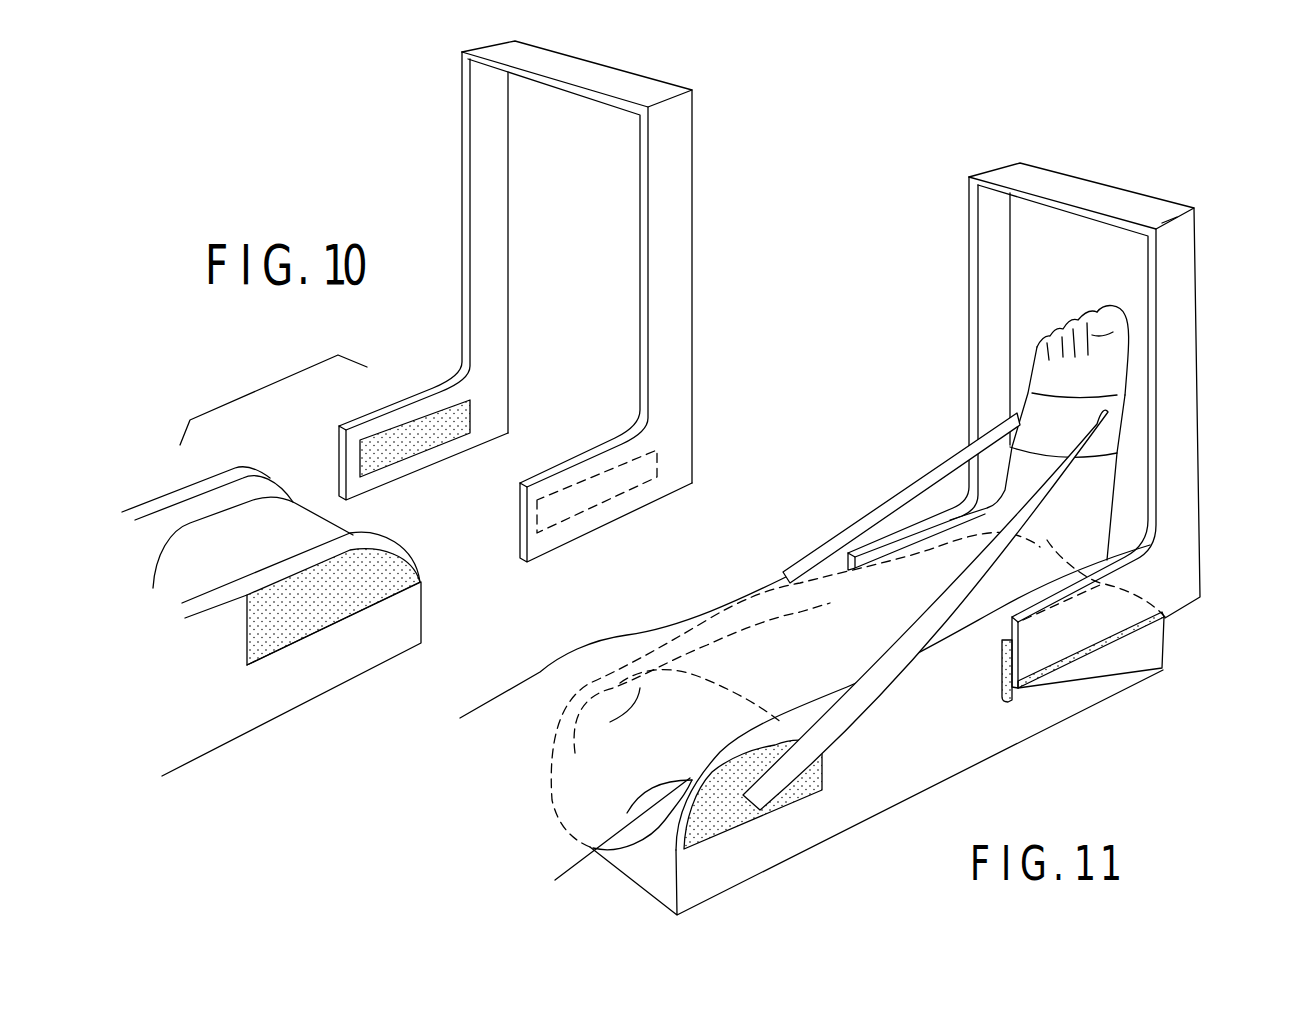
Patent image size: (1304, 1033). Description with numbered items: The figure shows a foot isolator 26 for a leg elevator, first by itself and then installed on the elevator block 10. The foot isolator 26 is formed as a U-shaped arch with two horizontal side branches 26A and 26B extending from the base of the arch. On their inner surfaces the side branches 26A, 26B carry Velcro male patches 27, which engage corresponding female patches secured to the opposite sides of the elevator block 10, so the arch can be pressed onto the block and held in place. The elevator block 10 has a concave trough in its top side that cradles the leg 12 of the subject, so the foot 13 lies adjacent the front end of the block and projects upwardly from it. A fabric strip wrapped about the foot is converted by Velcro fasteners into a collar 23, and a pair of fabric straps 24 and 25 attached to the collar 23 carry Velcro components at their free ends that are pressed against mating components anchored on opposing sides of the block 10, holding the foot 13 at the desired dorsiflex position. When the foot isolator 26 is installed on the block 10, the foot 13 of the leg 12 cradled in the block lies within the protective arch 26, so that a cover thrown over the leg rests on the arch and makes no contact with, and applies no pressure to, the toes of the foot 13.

In FIG. 10, the elevator block 10 is at (210, 743).
In FIG. 11, the elevator block 10 is at (859, 766).
In FIG. 11, the leg 12 is at (773, 635).
In FIG. 11, the foot 13 is at (1073, 323).
In FIG. 11, the collar 23 is at (1035, 405).
In FIG. 11, the fabric strap 24 is at (883, 665).
In FIG. 11, the fabric strap 25 is at (863, 515).
In FIG. 10, the foot isolator 26 is at (683, 192).
In FIG. 11, the foot isolator 26 is at (968, 241).
In FIG. 10, the side branch 26A is at (617, 512).
In FIG. 11, the side branch 26A is at (1177, 600).
In FIG. 10, the side branch 26B is at (410, 477).
In FIG. 11, the side branch 26B is at (916, 542).
In FIG. 10, the Velcro male patch 27 is at (333, 608).
In FIG. 11, the Velcro male patch 27 is at (1008, 693).